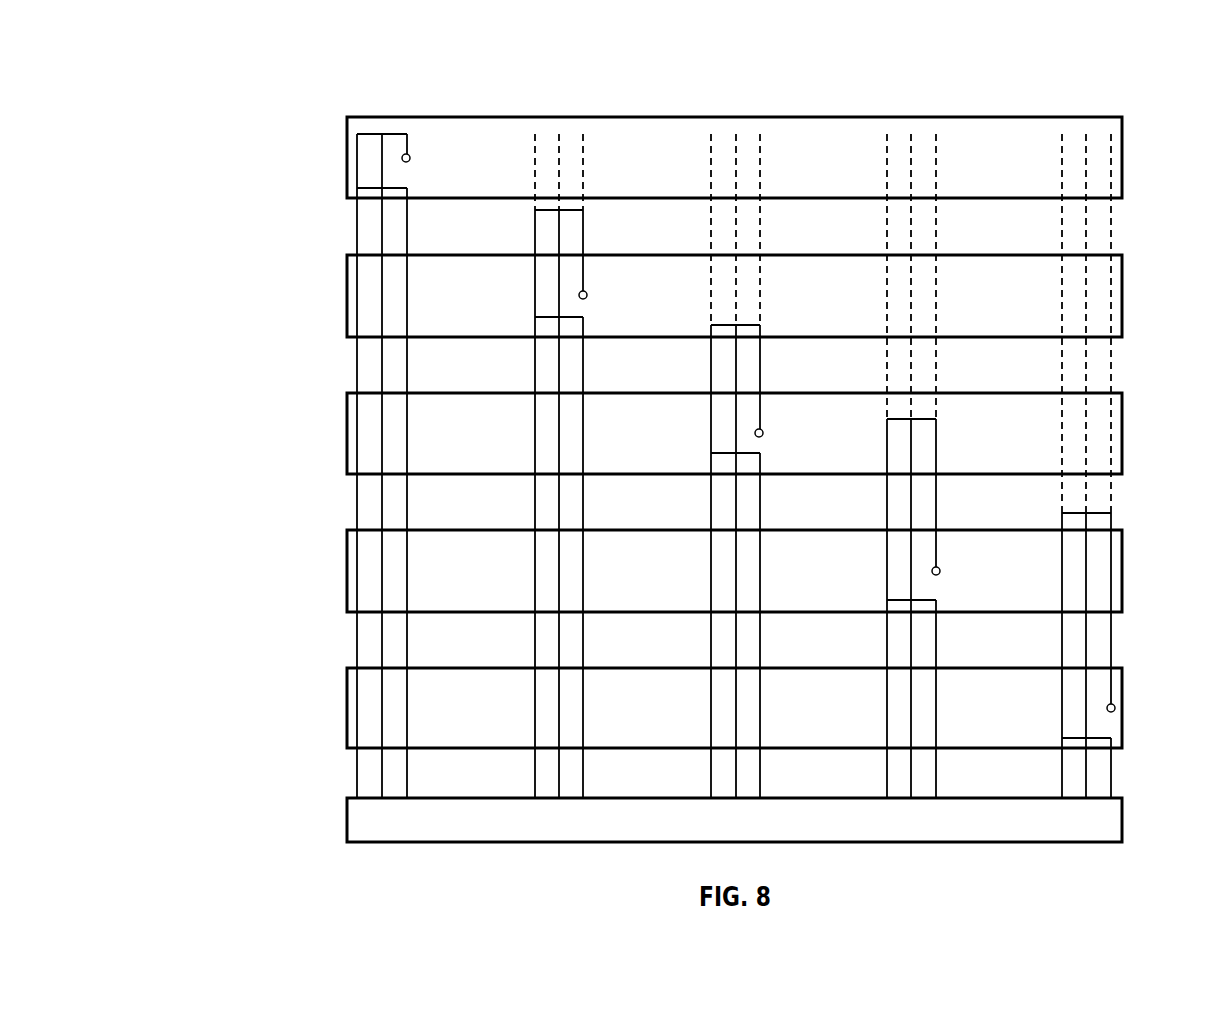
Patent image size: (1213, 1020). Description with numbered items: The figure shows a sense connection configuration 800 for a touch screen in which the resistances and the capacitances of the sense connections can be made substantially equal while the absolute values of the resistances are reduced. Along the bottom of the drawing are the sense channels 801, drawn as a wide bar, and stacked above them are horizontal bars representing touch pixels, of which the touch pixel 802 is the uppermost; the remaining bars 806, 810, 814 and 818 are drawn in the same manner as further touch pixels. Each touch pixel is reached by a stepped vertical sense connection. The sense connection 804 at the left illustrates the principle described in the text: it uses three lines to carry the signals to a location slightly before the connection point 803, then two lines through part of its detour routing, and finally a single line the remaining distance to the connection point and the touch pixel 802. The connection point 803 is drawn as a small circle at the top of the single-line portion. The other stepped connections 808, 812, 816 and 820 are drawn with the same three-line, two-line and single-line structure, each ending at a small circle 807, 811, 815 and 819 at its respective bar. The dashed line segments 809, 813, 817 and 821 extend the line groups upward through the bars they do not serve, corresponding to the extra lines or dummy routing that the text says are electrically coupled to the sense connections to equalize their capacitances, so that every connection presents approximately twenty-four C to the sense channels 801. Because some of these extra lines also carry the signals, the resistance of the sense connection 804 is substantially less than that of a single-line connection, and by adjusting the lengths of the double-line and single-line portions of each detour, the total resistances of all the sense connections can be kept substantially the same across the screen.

The sense connection configuration 800 is at (212, 83).
The sense channels 801 is at (1123, 818).
The touch pixel 802 is at (1122, 157).
The connection point 803 is at (410, 156).
The sense connection 804 is at (357, 512).
The second conductive layer 806 is at (1122, 295).
The second contact 807 is at (587, 293).
The second conductive plug 808 is at (583, 512).
The first opening 809 is at (583, 172).
The third conductive layer 810 is at (1122, 433).
The third contact 811 is at (763, 431).
The third conductive plug 812 is at (760, 577).
The second opening 813 is at (760, 172).
The fourth conductive layer 814 is at (1122, 570).
The fourth contact 815 is at (940, 569).
The fourth conductive plug 816 is at (936, 715).
The third opening 817 is at (936, 172).
The fifth conductive layer 818 is at (1123, 735).
The fifth contact 819 is at (1115, 706).
The fifth conductive plug 820 is at (1111, 778).
The fourth opening 821 is at (1111, 230).